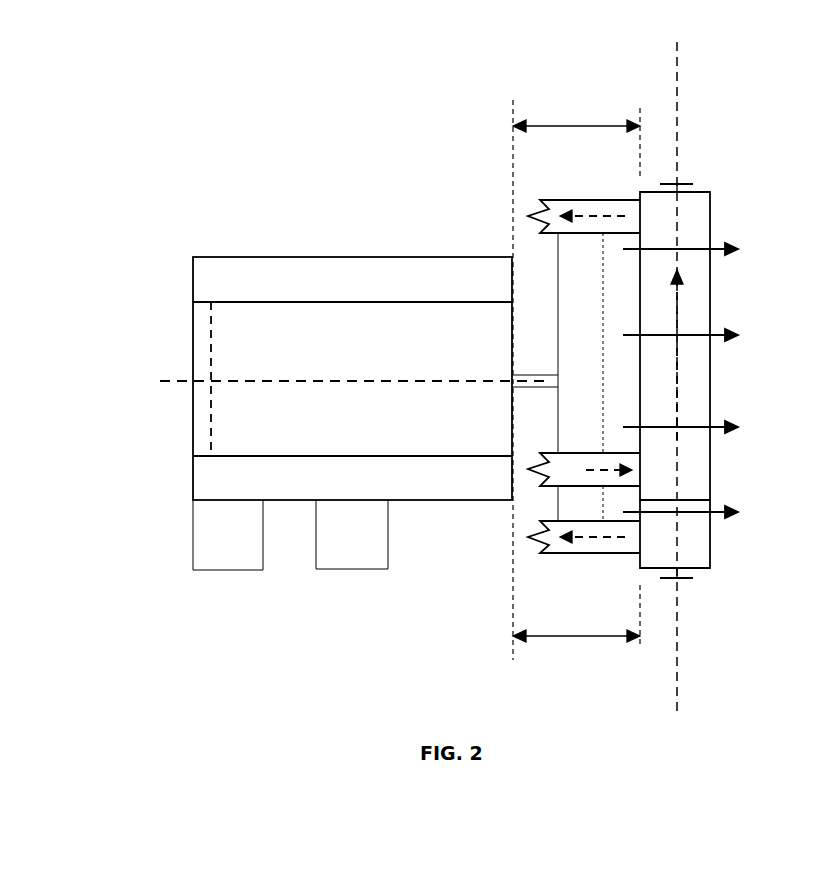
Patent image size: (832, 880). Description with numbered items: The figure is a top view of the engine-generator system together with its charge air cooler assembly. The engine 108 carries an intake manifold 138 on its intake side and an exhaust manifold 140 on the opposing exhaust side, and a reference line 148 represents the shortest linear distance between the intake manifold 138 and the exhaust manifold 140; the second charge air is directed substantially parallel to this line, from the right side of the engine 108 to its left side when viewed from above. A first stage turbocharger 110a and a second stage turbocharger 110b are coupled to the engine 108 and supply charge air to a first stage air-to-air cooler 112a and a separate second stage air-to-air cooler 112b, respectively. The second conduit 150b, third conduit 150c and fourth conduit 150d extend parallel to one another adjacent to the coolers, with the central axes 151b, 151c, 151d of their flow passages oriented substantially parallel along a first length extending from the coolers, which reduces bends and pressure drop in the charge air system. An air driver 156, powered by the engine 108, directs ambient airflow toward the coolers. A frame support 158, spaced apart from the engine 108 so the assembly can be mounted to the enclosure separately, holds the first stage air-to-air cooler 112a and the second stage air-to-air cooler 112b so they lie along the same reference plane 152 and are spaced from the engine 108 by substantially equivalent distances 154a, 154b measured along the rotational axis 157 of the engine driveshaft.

The engine 108 is at (253, 308).
The first stage turbocharger 110a is at (233, 560).
The second stage turbocharger 110b is at (351, 560).
The first stage air-to-air cooler 112a is at (700, 565).
The second stage air-to-air cooler 112b is at (700, 280).
The intake manifold 138 is at (352, 268).
The exhaust manifold 140 is at (445, 485).
The reference line 148 is at (211, 334).
The second conduit 150b is at (590, 553).
The third conduit 150c is at (628, 460).
The fourth conduit 150d is at (603, 200).
The central axis 151b is at (628, 535).
The central axis 151c is at (589, 470).
The central axis 151d is at (628, 214).
The reference plane 152 is at (680, 72).
The distance 154a is at (570, 636).
The distance 154b is at (578, 126).
The air driver 156 is at (568, 262).
The rotational axis 157 is at (316, 381).
The frame support 158 is at (667, 578).